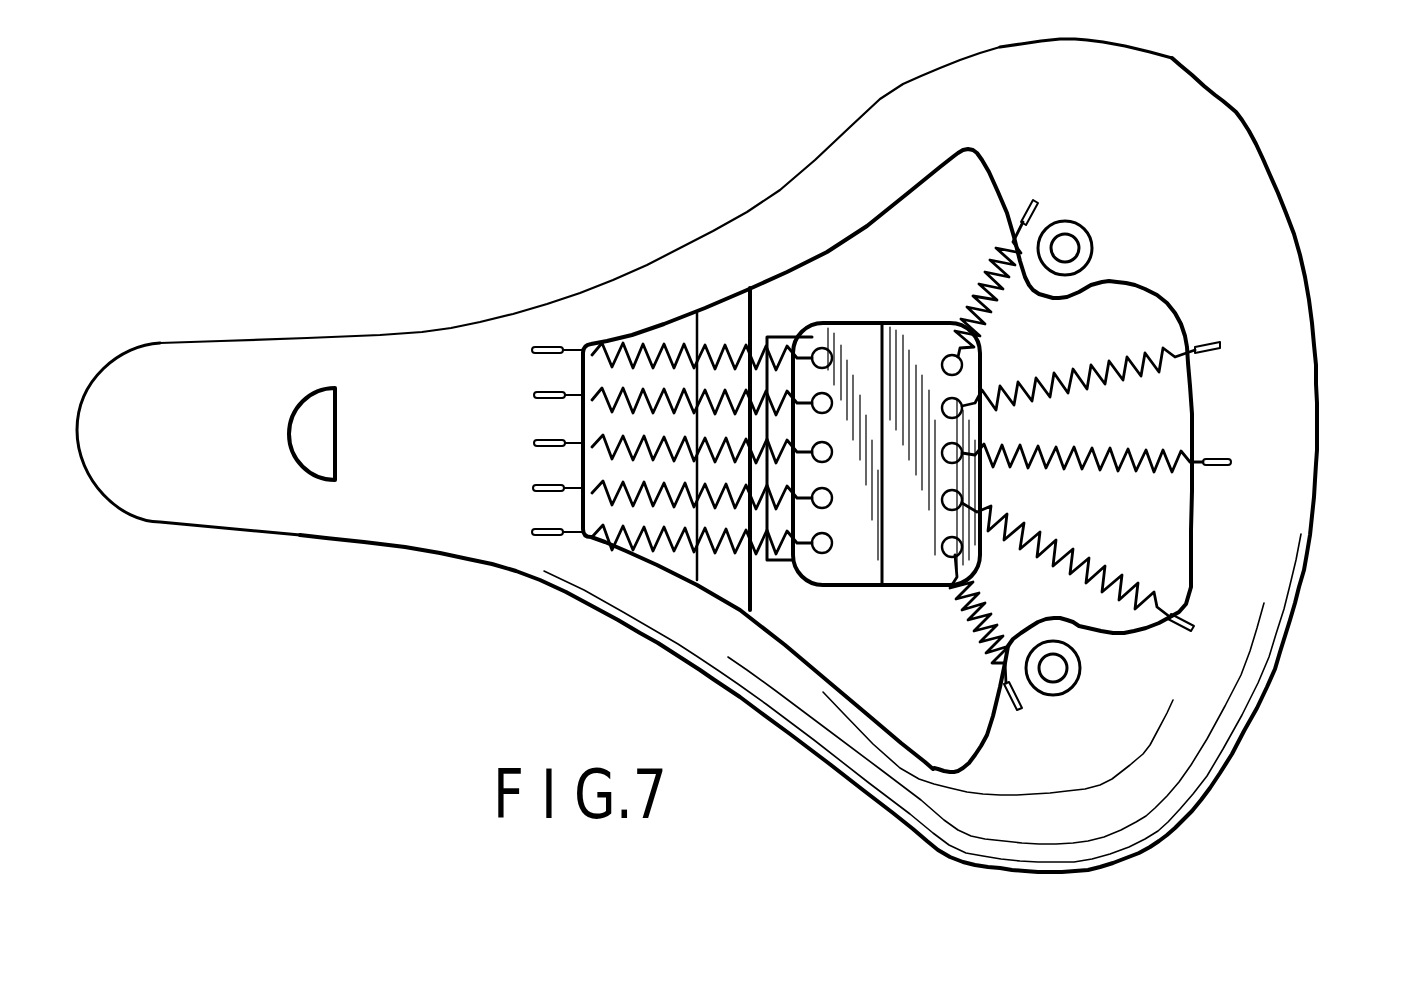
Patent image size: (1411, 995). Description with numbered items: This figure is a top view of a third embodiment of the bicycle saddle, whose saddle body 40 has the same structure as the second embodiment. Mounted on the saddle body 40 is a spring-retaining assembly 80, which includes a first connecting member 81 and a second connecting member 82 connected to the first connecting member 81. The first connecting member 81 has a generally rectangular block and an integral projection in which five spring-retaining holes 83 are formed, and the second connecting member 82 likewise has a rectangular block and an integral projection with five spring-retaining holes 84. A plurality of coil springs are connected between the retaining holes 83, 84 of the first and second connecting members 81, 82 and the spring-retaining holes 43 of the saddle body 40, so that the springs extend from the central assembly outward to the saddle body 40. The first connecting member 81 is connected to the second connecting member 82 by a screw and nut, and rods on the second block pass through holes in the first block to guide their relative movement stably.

The saddle body 40 is at (1318, 481).
The spring-retaining holes 43 is at (551, 347).
The spring-retaining assembly 80 is at (846, 451).
The first connecting member 81 is at (840, 575).
The second connecting member 82 is at (907, 577).
The spring-retaining holes 83 is at (815, 335).
The spring-retaining holes 84 is at (950, 353).